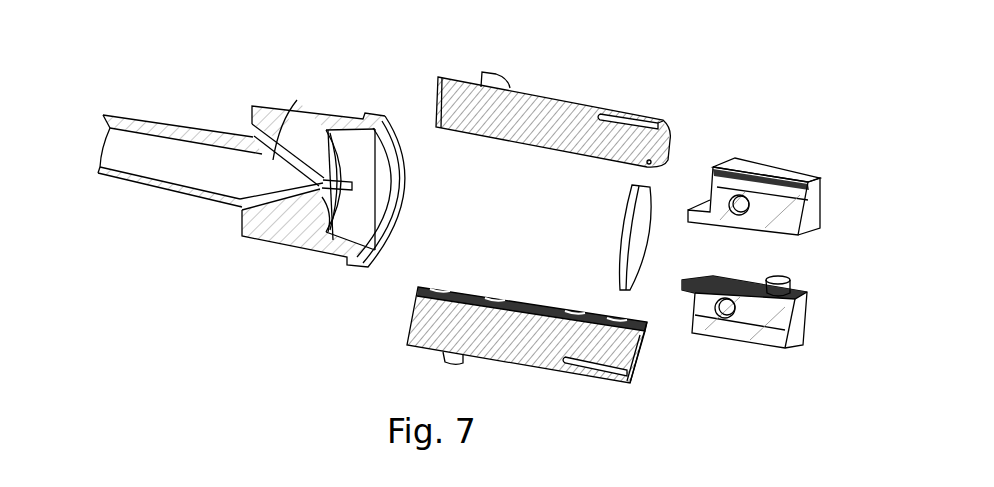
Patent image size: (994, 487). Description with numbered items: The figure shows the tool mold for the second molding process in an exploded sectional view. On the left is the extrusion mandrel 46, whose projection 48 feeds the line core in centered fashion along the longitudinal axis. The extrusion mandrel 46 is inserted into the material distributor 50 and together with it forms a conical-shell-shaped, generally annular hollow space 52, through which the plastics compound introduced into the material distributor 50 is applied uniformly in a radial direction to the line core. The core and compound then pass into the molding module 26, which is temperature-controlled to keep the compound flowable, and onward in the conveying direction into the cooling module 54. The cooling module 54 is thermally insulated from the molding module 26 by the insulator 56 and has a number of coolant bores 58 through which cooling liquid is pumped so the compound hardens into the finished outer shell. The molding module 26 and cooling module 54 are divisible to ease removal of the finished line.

The molding module 26 is at (558, 100).
The extrusion mandrel 46 is at (203, 197).
The projection 48 is at (284, 237).
The material distributor 50 is at (327, 112).
The hollow space 52 is at (288, 125).
The cooling module 54 is at (777, 162).
The insulator 56 is at (617, 258).
The coolant bores 58 is at (735, 194).